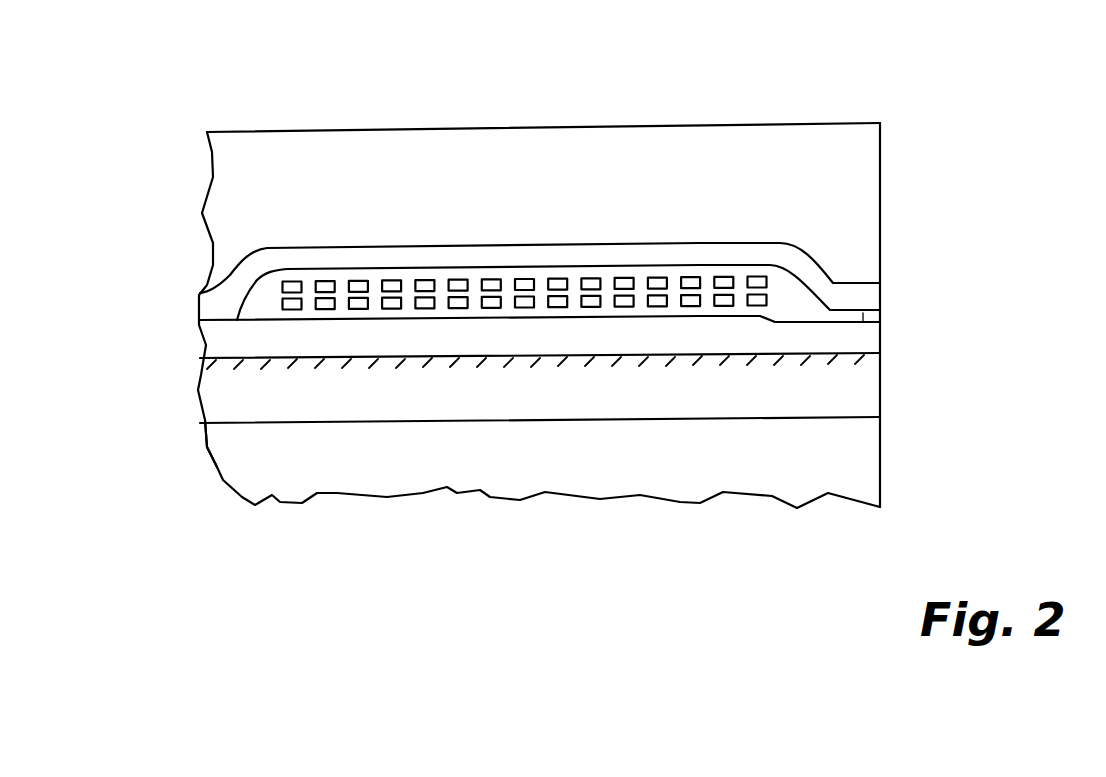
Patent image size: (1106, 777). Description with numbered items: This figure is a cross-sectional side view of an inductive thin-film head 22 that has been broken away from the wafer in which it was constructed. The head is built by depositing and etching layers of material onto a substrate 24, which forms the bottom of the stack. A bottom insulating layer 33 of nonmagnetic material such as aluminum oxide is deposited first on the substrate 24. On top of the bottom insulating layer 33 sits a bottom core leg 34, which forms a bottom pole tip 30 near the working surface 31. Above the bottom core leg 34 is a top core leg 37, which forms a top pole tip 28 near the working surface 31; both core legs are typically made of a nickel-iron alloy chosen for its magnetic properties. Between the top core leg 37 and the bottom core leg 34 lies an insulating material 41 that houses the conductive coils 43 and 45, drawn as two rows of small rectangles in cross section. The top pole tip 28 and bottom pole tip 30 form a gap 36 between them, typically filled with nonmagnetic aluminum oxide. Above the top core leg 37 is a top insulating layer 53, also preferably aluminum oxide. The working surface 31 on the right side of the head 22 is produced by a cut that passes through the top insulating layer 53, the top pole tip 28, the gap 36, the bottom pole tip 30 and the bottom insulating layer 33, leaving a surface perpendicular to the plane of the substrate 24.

The inductive thin-film head 22 is at (876, 93).
The substrate 24 is at (228, 443).
The top pole tip 28 is at (813, 277).
The bottom pole tip 30 is at (808, 337).
The working surface 31 is at (892, 330).
The bottom insulating layer 33 is at (213, 385).
The bottom core leg 34 is at (218, 335).
The gap 36 is at (863, 313).
The top core leg 37 is at (753, 252).
The insulating material 41 is at (457, 283).
The conductive coils 43 is at (558, 284).
The conductive coils 45 is at (657, 302).
The top insulating layer 53 is at (297, 148).